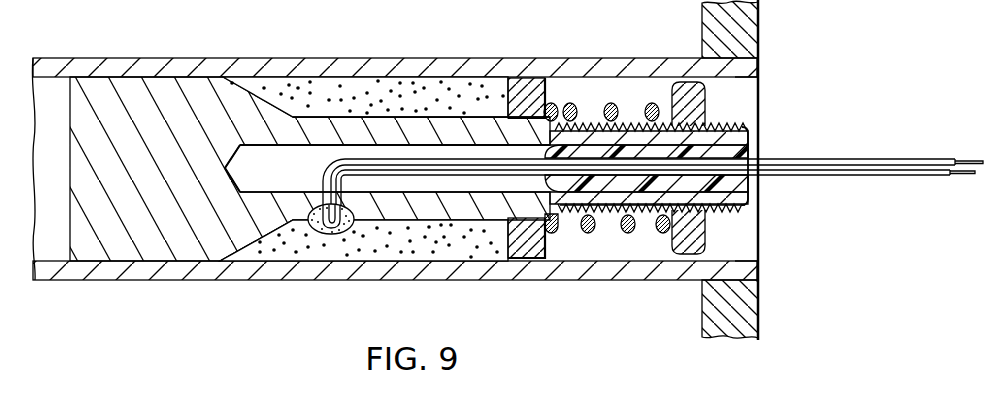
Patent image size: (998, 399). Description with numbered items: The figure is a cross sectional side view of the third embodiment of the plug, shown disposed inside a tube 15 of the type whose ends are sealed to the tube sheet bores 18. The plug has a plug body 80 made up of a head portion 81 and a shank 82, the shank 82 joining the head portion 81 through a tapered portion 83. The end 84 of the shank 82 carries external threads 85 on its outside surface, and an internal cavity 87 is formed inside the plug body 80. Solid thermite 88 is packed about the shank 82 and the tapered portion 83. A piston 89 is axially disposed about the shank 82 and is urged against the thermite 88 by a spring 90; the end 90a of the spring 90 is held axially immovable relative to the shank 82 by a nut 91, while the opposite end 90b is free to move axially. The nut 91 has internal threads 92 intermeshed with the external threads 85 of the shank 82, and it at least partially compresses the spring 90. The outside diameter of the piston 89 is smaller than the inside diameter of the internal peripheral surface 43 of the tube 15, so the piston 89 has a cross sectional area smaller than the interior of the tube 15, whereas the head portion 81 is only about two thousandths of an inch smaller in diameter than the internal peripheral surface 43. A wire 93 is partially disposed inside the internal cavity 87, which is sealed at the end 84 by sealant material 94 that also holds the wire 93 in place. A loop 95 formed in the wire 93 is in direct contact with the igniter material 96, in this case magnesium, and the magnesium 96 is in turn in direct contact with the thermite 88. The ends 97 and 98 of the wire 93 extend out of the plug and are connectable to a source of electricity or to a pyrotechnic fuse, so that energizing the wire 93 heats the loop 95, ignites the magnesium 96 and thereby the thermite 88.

The tube 15 is at (137, 63).
The tube sheet bore 18 is at (757, 55).
The internal peripheral surface 43 is at (735, 80).
The plug body 80 is at (203, 215).
The head portion 81 is at (110, 113).
The shank 82 is at (383, 127).
The tapered portion 83 is at (262, 98).
The end of shank 84 is at (733, 204).
The external threads 85 is at (707, 216).
The internal cavity 87 is at (272, 173).
The solid thermite 88 is at (338, 108).
The piston 89 is at (523, 95).
The spring 90 is at (558, 108).
The end of spring 90a is at (667, 233).
The end of spring 90b is at (552, 233).
The nut 91 is at (688, 85).
The internal threads 92 is at (745, 131).
The wire 93 is at (866, 164).
The sealant material 94 is at (728, 150).
The loop 95 is at (315, 233).
The igniter material 96 is at (333, 241).
The end of wire 97 is at (947, 164).
The end of wire 98 is at (927, 175).